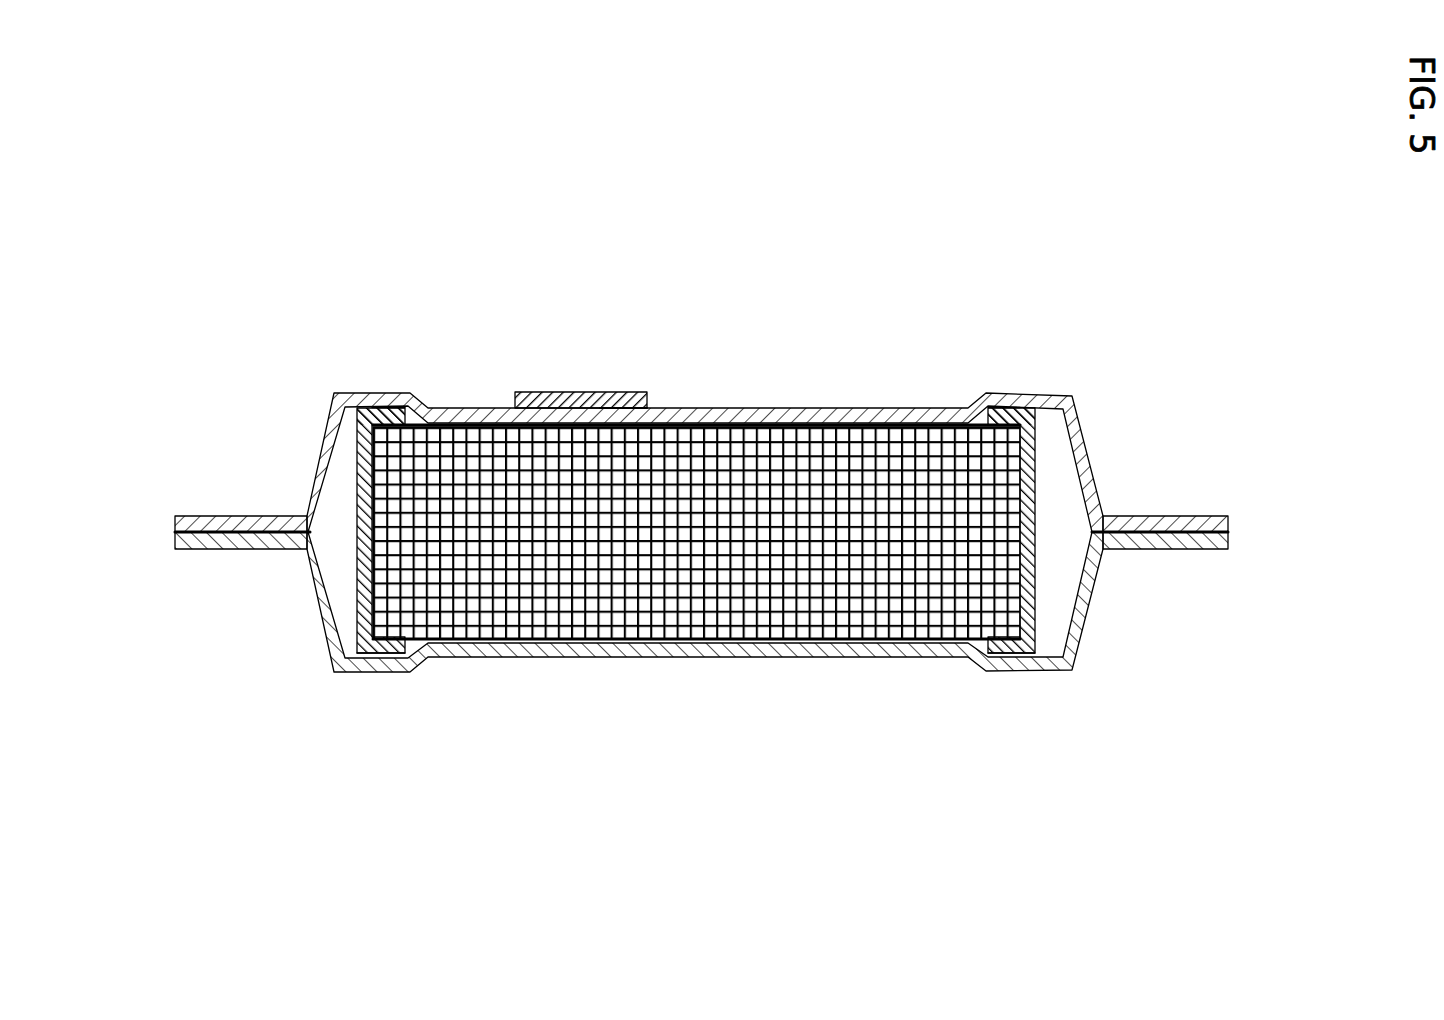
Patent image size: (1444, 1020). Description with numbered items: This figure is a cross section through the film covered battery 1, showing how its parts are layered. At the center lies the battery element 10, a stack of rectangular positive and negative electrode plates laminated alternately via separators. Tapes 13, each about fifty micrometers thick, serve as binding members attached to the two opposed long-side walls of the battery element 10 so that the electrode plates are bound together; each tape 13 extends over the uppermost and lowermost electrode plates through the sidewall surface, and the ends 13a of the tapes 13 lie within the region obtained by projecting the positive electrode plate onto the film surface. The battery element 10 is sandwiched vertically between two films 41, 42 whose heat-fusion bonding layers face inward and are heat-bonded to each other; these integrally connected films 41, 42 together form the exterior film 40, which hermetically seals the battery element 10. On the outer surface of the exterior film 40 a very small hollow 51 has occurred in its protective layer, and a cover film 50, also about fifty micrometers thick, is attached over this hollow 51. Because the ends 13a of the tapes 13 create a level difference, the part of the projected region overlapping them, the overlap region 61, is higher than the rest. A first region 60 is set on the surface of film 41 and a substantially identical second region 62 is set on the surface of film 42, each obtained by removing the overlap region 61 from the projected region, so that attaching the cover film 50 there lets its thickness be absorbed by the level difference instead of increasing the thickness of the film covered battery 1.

The film covered battery 1 is at (902, 718).
The battery element 10 is at (993, 587).
The tape 13 is at (355, 465).
The end of tape 13a is at (373, 393).
The exterior film 40 is at (1240, 541).
The film 41 is at (1185, 515).
The film 42 is at (1201, 562).
The cover film 50 is at (592, 392).
The hollow 51 is at (648, 407).
The first region 60 is at (902, 408).
The overlap region 61 is at (383, 407).
The second region 62 is at (592, 657).